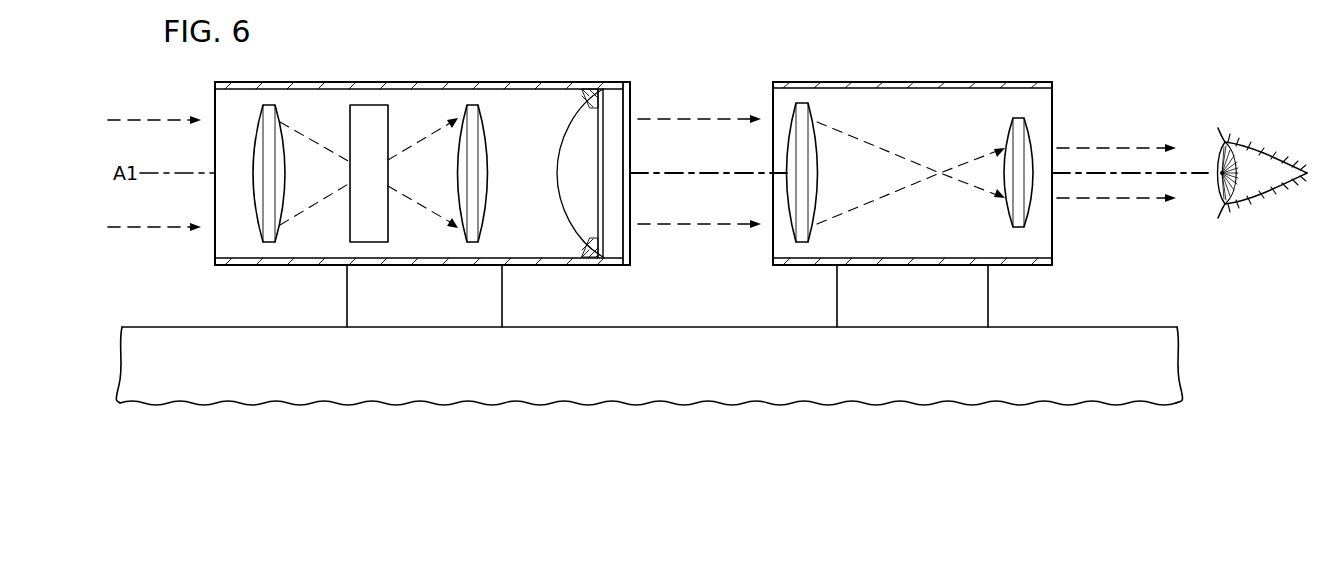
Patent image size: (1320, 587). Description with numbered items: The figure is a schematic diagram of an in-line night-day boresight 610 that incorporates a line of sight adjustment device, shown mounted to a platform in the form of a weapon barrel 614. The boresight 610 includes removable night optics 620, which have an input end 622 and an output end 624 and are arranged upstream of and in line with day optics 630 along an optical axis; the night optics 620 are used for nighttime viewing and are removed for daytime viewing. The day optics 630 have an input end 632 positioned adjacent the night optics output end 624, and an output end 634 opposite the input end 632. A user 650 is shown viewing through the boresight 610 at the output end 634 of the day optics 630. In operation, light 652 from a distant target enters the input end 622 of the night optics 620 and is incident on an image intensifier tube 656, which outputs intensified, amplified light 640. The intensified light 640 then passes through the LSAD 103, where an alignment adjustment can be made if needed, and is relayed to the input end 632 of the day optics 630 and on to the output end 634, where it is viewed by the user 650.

The in-line night-day boresight 610 is at (1187, 59).
The night optics 620 is at (348, 76).
The input end of night optics 622 is at (215, 152).
The output end of night optics 624 is at (630, 150).
The day optics 630 is at (969, 76).
The input end of day optics 632 is at (773, 152).
The output end of day optics 634 is at (1052, 113).
The intensified light 640 is at (705, 117).
The user 650 is at (1271, 216).
The light from a distant target 652 is at (139, 118).
The image intensifier tube 656 is at (350, 222).
The LSAD 103 is at (640, 189).
The weapon barrel 614 is at (697, 378).